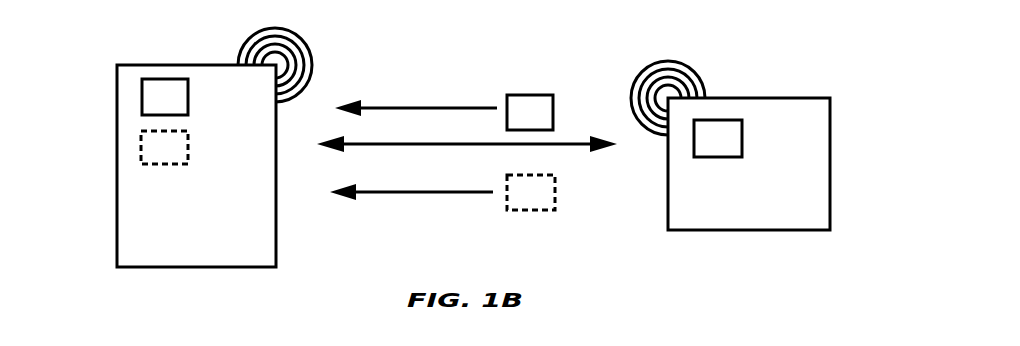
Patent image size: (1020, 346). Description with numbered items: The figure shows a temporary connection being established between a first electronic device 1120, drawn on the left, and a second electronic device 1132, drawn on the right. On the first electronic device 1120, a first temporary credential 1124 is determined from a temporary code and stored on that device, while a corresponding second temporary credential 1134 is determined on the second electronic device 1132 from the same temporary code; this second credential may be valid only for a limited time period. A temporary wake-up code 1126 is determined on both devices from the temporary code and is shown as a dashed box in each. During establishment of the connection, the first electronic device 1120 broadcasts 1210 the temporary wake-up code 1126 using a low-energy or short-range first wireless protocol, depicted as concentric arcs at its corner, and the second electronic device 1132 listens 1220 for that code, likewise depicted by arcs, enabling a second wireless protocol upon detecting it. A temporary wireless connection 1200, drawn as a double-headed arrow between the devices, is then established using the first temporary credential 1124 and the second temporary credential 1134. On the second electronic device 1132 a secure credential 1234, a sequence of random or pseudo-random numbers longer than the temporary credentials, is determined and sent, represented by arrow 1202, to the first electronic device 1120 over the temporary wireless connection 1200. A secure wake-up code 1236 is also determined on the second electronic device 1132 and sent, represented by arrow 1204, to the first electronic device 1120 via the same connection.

The first electronic device 1120 is at (137, 222).
The first temporary credential 1124 is at (158, 95).
The temporary wake-up code 1126 is at (158, 145).
The second electronic device 1132 is at (815, 162).
The second temporary credential 1134 is at (708, 132).
The temporary wireless connection 1200 is at (573, 147).
The arrow representing sending of the secure credential 1202 is at (393, 107).
The arrow representing sending of the secure wake-up code 1204 is at (372, 193).
The broadcasting of the temporary wake-up code 1210 is at (243, 43).
The listening for the temporary wake-up code 1220 is at (660, 62).
The secure credential 1234 is at (523, 102).
The secure wake-up code 1236 is at (532, 193).